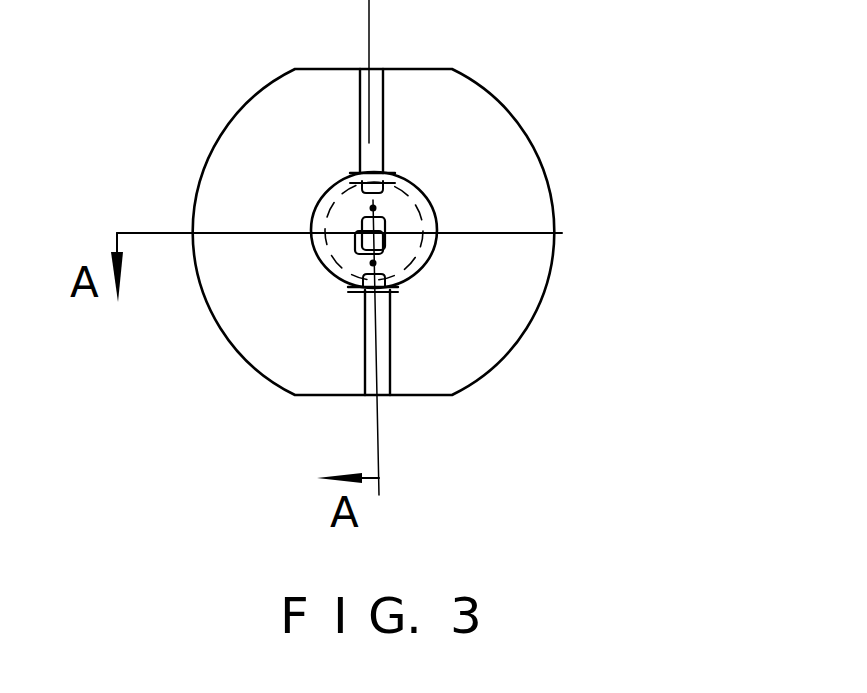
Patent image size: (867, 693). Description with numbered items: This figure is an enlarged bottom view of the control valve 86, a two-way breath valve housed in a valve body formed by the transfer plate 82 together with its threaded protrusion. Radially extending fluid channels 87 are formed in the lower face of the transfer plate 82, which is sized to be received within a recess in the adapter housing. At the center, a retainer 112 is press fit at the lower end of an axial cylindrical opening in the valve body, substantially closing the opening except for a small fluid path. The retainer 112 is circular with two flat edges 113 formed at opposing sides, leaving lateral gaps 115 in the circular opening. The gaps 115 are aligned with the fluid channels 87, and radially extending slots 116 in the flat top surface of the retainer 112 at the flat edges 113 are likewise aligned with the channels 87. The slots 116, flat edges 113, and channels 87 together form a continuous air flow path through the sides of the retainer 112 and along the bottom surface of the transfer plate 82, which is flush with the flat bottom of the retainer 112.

The transfer plate 82 is at (517, 168).
The control valve 86 is at (190, 93).
The fluid channels 87 is at (377, 90).
The retainer 112 is at (428, 258).
The flat edges 113 is at (395, 318).
The lateral gaps 115 is at (365, 318).
The slots 116 is at (379, 182).